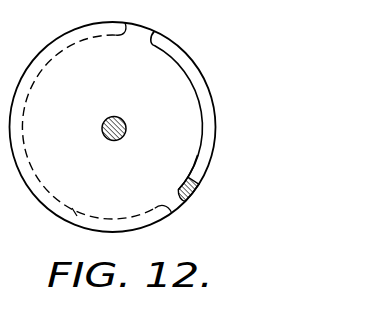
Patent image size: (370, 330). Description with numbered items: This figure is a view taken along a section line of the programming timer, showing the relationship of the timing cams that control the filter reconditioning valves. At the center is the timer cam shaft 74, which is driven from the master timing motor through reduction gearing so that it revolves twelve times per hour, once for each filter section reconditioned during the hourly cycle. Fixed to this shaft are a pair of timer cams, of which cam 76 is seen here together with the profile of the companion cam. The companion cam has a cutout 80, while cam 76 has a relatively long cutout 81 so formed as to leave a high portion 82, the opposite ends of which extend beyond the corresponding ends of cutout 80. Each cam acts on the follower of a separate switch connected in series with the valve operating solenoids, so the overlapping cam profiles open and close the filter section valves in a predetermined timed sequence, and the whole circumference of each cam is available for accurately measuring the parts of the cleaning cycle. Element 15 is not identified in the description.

The timer cam shaft 74 is at (109, 116).
The high portion 82 is at (202, 71).
The cutout 80 is at (203, 133).
The cam 76 is at (198, 162).
The hatched end portion 15 is at (167, 181).
The cutout 81 is at (61, 218).